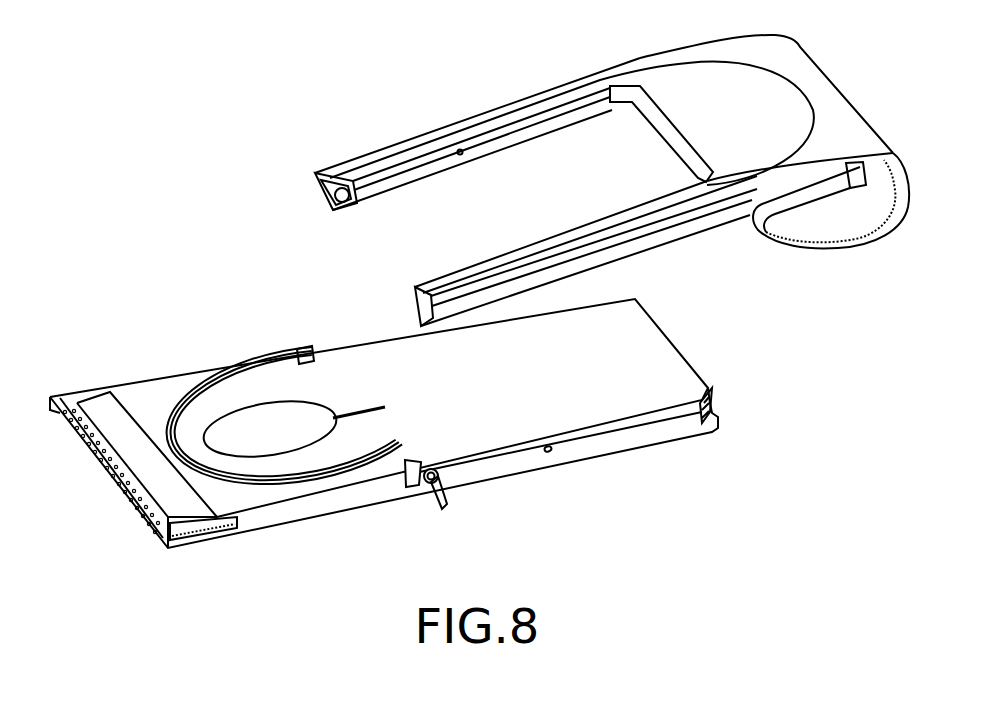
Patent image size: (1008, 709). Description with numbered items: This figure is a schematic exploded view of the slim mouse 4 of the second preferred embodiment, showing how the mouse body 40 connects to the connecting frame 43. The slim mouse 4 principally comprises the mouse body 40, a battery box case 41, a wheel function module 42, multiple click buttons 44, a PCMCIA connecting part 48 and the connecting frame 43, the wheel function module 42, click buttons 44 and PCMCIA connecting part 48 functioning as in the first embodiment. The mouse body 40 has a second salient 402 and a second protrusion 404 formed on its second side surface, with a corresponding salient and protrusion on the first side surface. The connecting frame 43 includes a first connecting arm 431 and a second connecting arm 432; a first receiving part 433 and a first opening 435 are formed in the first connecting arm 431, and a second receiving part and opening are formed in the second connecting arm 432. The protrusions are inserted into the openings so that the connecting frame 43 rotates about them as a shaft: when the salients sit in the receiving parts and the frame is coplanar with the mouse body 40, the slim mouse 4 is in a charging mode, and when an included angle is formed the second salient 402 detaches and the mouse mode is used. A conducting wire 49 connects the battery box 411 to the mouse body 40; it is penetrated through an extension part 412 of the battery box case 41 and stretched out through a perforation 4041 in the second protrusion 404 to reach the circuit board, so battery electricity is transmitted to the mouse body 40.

The slim mouse 4 is at (220, 38).
The mouse body 40 is at (141, 397).
The second salient 402 is at (553, 452).
The second protrusion 404 is at (420, 470).
The perforation 4041 is at (437, 470).
The battery box case 41 is at (773, 57).
The battery box 411 is at (842, 217).
The extension part 412 is at (547, 93).
The wheel function module 42 is at (207, 447).
The connecting frame 43 is at (547, 123).
The first connecting arm 431 is at (393, 173).
The second connecting arm 432 is at (415, 290).
The first receiving part 433 is at (460, 150).
The first opening 435 is at (362, 203).
The click buttons 44 is at (260, 382).
The PCMCIA connecting part 48 is at (137, 460).
The conducting wire 49 is at (443, 497).